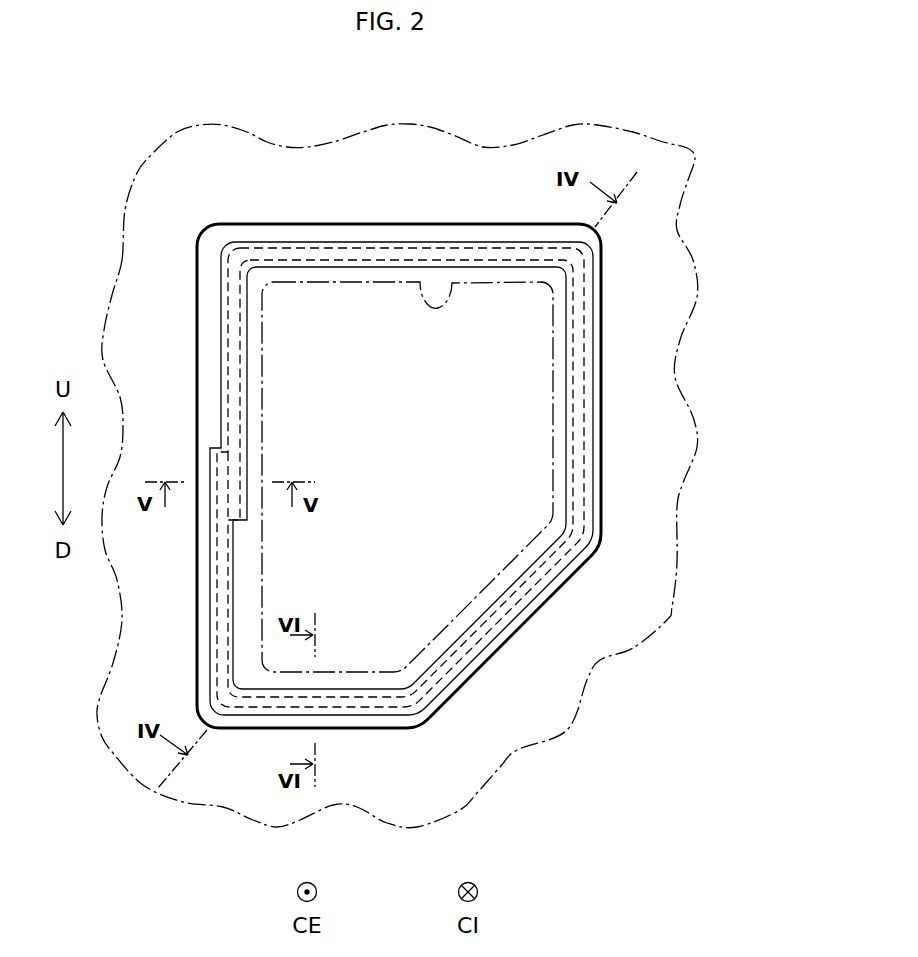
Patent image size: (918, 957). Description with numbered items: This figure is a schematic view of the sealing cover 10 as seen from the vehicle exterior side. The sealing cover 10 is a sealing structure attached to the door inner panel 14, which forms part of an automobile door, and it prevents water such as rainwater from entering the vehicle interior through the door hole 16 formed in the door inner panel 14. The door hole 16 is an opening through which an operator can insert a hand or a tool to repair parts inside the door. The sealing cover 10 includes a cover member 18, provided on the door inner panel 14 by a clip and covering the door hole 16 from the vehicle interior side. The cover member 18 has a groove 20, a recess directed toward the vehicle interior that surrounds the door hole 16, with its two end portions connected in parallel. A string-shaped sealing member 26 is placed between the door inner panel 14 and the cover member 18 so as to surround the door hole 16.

The sealing cover 10 is at (614, 316).
The door inner panel 14 is at (456, 138).
The door hole 16 is at (452, 300).
The cover member 18 is at (602, 362).
The groove 20 is at (593, 482).
The sealing member 26 is at (595, 515).